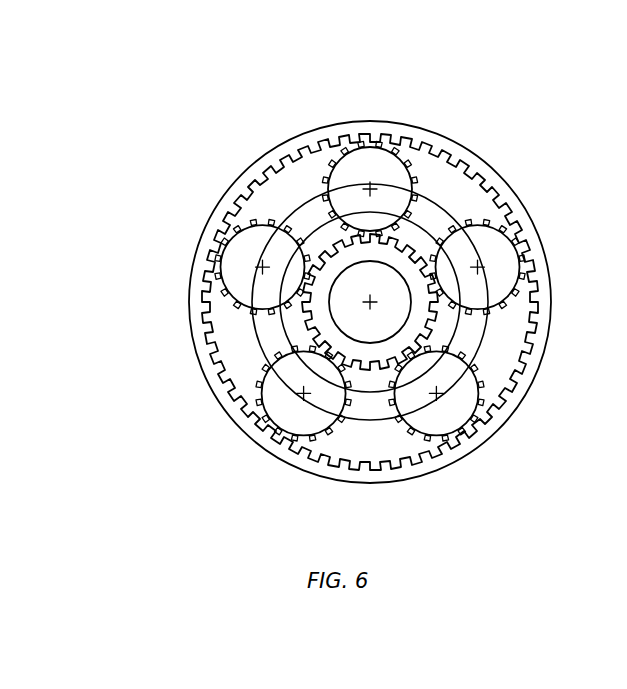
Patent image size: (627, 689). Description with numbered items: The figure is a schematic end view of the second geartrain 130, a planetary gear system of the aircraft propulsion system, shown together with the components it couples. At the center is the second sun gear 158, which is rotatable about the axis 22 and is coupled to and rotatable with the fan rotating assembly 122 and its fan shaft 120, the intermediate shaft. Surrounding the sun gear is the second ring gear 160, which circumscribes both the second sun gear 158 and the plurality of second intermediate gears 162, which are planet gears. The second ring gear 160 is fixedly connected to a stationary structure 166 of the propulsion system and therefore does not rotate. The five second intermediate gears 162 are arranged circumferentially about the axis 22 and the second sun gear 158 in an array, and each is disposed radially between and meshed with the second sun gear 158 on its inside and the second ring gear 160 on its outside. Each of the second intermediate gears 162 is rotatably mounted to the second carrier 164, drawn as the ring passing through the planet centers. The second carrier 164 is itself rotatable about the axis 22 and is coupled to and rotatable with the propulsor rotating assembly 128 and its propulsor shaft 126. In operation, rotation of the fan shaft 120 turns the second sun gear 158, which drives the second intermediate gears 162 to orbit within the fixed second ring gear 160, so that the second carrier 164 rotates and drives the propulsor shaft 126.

The axis 22 is at (370, 312).
The fan shaft 120 is at (230, 302).
The fan rotating assembly 122 is at (310, 328).
The propulsor shaft 126 is at (146, 235).
The propulsor rotating assembly 128 is at (258, 255).
The second geartrain 130 is at (523, 125).
The second sun gear 158 is at (297, 350).
The second ring gear 160 is at (325, 127).
The second intermediate gears 162 is at (252, 225).
The second carrier 164 is at (307, 200).
The stationary structure 166 is at (303, 132).